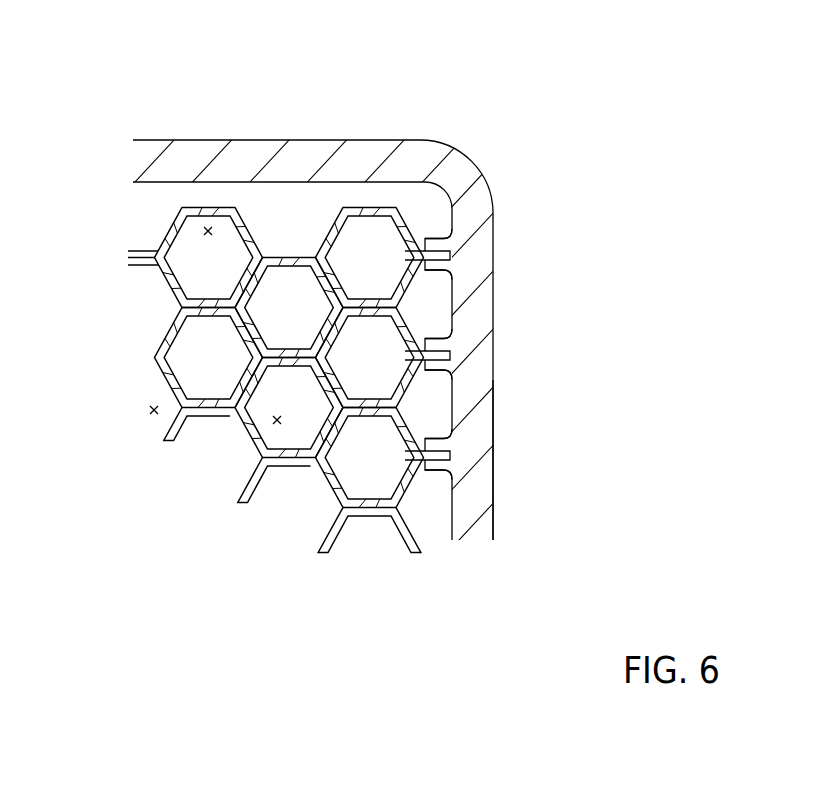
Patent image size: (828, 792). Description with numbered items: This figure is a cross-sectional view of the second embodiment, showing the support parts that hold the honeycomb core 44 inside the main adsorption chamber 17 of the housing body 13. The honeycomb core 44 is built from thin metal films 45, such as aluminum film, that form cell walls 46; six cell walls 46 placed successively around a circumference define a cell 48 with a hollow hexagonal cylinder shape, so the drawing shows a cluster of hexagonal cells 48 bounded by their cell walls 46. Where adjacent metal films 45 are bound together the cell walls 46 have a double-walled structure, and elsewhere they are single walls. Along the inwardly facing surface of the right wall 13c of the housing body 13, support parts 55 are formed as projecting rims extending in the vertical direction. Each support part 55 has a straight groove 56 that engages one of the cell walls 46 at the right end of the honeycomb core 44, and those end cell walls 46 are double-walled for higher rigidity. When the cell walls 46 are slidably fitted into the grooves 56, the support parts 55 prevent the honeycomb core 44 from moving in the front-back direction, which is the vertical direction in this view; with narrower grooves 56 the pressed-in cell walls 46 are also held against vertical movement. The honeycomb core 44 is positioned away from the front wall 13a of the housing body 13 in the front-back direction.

The housing body 13 is at (414, 317).
The front wall 13a is at (242, 150).
The right wall 13c is at (470, 520).
The main adsorption chamber 17 is at (150, 410).
The honeycomb core 44 is at (300, 216).
The metal film 45 is at (146, 249).
The cell wall 46 is at (433, 258).
The cell 48 is at (208, 227).
The support part 55 is at (436, 237).
The groove 56 is at (452, 236).